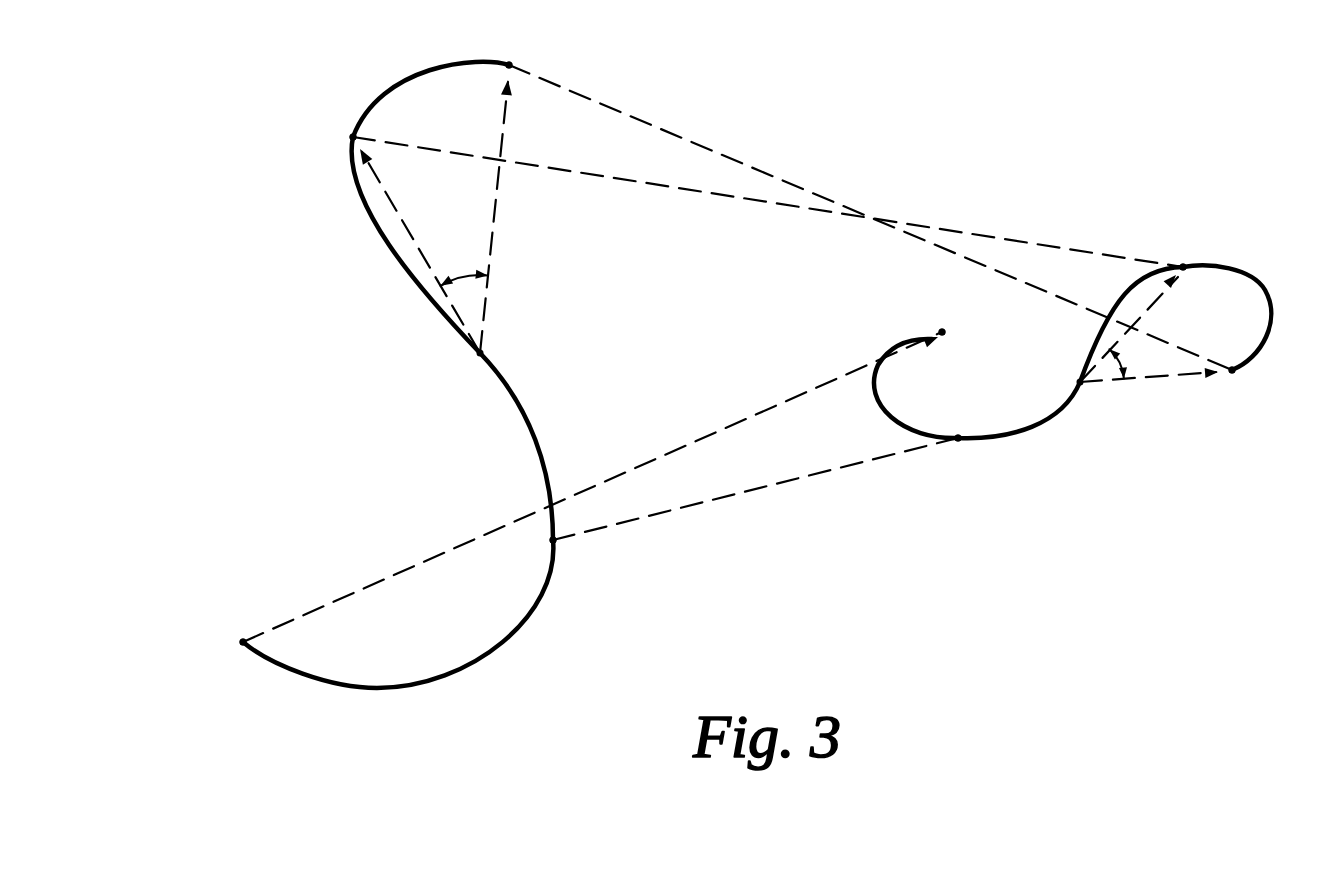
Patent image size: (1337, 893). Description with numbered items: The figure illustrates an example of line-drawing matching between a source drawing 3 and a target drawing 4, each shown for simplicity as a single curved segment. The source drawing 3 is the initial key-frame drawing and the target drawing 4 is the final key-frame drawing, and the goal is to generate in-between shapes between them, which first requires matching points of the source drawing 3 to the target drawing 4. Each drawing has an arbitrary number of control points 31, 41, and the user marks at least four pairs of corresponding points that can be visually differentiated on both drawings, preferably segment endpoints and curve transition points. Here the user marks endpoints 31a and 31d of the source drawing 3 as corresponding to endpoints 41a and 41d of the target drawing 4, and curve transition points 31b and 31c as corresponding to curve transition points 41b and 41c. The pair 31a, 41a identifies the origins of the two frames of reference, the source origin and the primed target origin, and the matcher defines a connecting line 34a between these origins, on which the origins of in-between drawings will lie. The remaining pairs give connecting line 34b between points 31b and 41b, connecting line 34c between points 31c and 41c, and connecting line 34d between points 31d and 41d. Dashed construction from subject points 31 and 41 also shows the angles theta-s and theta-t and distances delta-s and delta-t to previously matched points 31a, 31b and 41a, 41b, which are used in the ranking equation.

The source drawing 3 is at (276, 363).
The target drawing 4 is at (1173, 448).
The control point of source drawing 31 is at (484, 352).
The endpoint of source drawing 31a is at (506, 68).
The curve transition point of source drawing 31b is at (351, 140).
The curve transition point of source drawing 31c is at (552, 542).
The endpoint of source drawing 31d is at (243, 640).
The connecting line 34a is at (692, 145).
The connecting line 34b is at (682, 190).
The connecting line 34c is at (775, 485).
The connecting line 34d is at (665, 456).
The control point of target drawing 41 is at (1079, 381).
The endpoint of target drawing 41a is at (1236, 371).
The curve transition point of target drawing 41b is at (1181, 266).
The curve transition point of target drawing 41c is at (960, 438).
The endpoint of target drawing 41d is at (938, 331).